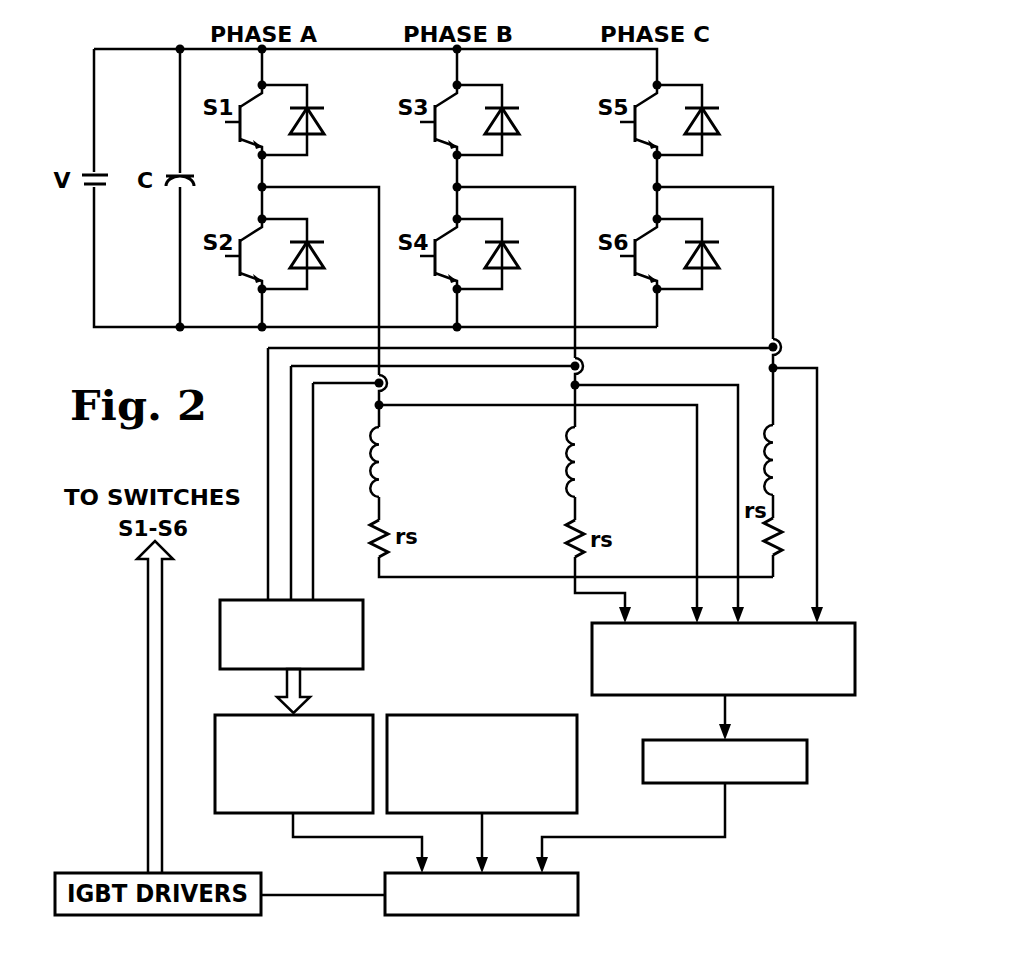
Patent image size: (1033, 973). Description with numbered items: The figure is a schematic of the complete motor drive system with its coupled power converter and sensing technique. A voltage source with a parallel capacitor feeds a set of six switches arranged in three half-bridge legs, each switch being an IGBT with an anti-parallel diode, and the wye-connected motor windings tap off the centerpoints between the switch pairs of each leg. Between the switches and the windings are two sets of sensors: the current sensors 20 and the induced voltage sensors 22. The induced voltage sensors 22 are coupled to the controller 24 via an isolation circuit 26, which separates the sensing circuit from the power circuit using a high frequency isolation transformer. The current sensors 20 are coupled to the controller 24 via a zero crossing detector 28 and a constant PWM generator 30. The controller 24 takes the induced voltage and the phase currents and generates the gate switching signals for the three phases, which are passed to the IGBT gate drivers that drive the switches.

The current sensors 20 is at (363, 634).
The induced voltage sensors 22 is at (826, 695).
The controller 24 is at (578, 893).
The isolation circuit 26 is at (797, 783).
The zero crossing detector 28 is at (330, 715).
The constant PWM generator 30 is at (475, 715).